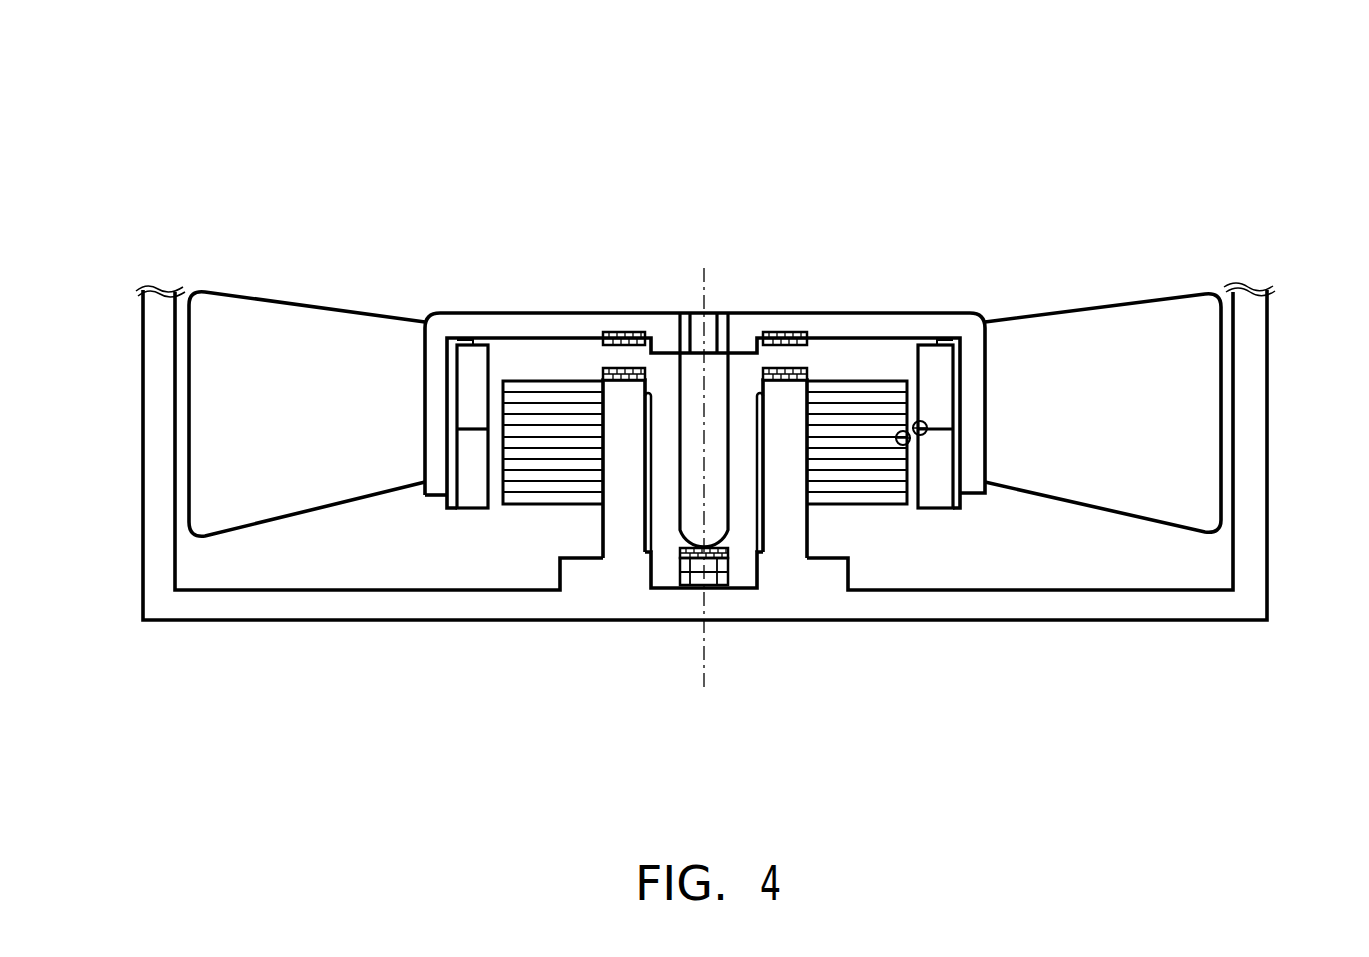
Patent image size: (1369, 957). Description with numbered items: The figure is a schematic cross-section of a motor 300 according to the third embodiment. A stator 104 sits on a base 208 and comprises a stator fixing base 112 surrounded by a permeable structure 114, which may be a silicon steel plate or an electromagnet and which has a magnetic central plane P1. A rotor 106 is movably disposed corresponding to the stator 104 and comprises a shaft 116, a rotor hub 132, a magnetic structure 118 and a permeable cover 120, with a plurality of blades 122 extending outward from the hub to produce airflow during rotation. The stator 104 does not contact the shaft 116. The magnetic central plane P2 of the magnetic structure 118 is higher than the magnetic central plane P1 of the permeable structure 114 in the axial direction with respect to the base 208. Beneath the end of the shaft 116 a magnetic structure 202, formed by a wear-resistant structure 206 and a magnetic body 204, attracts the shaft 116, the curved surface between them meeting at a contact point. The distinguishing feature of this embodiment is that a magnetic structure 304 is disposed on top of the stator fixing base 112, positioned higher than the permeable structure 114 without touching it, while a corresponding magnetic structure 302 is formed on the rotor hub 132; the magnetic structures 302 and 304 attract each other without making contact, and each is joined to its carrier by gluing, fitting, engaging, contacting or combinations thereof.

The motor 300 is at (190, 59).
The stator 104 is at (593, 169).
The permeable structure 114 is at (522, 405).
The stator fixing base 112 is at (612, 390).
The magnetic structure 302 is at (622, 335).
The magnetic structure 304 is at (637, 372).
The rotor 106 is at (1037, 137).
The shaft 116 is at (720, 363).
The rotor hub 132 is at (823, 330).
The magnetic structure 118 is at (932, 362).
The permeable cover 120 is at (946, 343).
The blades 122 is at (1040, 330).
The magnetic structure 202 is at (775, 788).
The magnetic body 204 is at (690, 588).
The wear-resistant structure 206 is at (717, 588).
The base 208 is at (1185, 610).
The magnetic central plane P1 is at (922, 454).
The magnetic central plane P2 is at (943, 408).